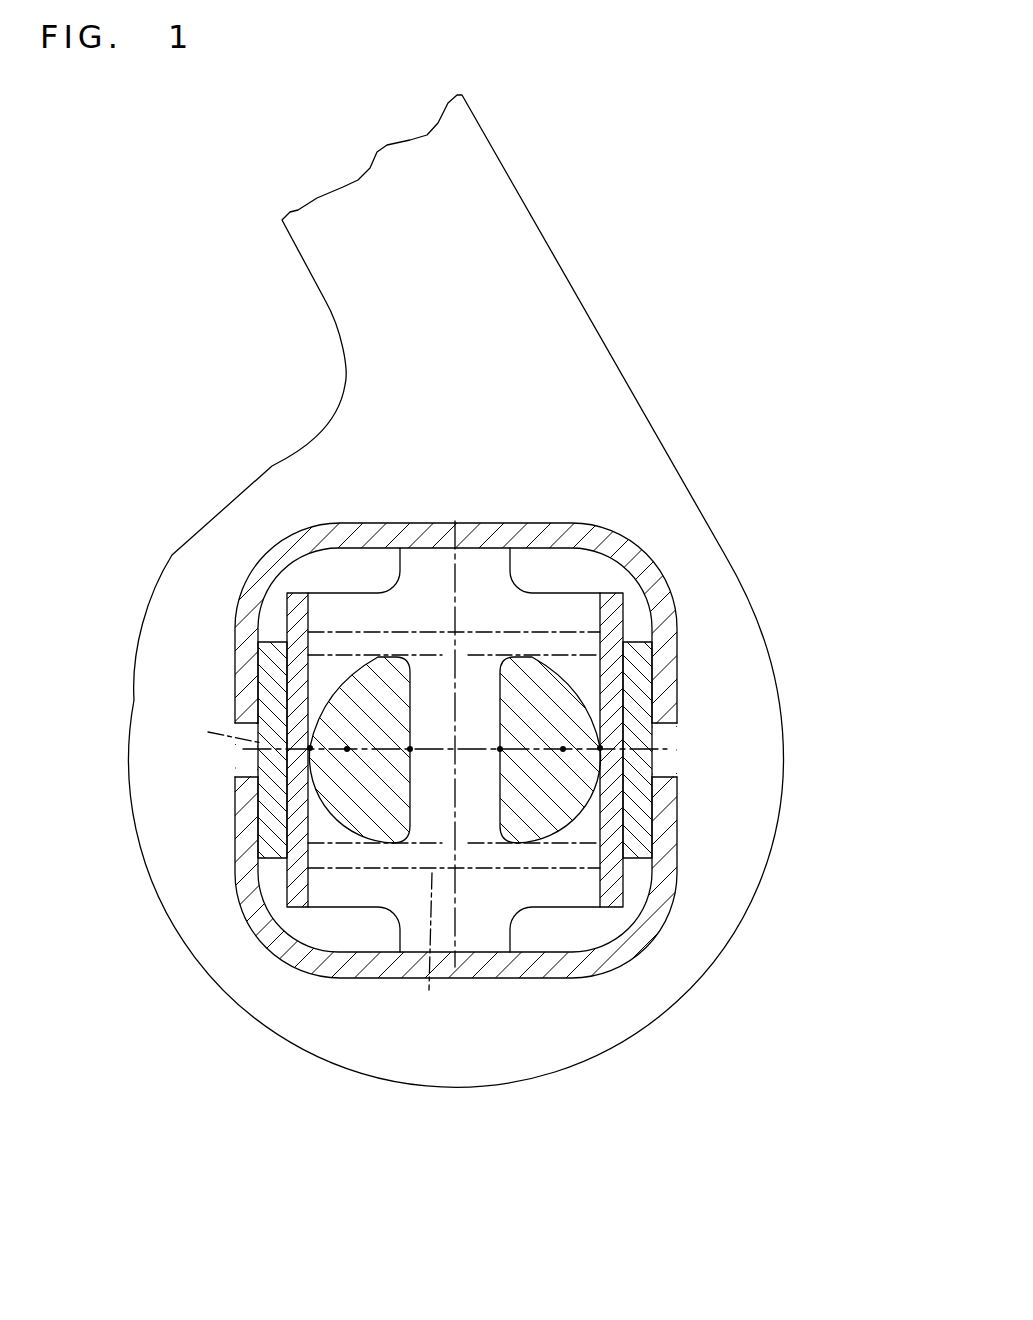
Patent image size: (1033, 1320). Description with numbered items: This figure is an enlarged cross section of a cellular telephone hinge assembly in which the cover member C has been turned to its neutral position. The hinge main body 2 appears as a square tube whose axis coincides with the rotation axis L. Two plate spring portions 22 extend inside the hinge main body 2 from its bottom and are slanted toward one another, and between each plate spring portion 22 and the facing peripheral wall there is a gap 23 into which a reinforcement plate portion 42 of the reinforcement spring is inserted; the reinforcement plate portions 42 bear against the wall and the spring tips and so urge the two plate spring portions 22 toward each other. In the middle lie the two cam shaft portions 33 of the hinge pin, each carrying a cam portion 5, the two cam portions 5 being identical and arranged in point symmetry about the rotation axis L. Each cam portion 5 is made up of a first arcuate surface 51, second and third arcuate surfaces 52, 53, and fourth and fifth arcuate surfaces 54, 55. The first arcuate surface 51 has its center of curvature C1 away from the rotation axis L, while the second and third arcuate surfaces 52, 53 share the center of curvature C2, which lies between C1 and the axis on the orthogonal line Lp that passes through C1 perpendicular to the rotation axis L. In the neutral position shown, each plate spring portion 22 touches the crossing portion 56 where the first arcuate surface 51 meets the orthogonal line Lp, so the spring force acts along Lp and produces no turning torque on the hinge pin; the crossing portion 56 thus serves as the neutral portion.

The cover member C is at (542, 226).
The hinge main body 2 is at (363, 522).
The plate spring portion 22 is at (497, 632).
The gap 23 is at (633, 613).
The cam shaft portion 33 is at (386, 845).
The reinforcement plate portion 42 is at (270, 830).
The cam portion 5 is at (316, 690).
The first arcuate surface 51 is at (250, 740).
The second arcuate surface 52 is at (340, 672).
The third arcuate surface 53 is at (290, 878).
The fourth arcuate surface 54 is at (388, 652).
The fifth arcuate surface 55 is at (523, 652).
The crossing portion 56 is at (250, 763).
The center of curvature C1 is at (410, 749).
The center of curvature C2 is at (348, 749).
The rotation axis L is at (457, 750).
The orthogonal line Lp is at (208, 732).